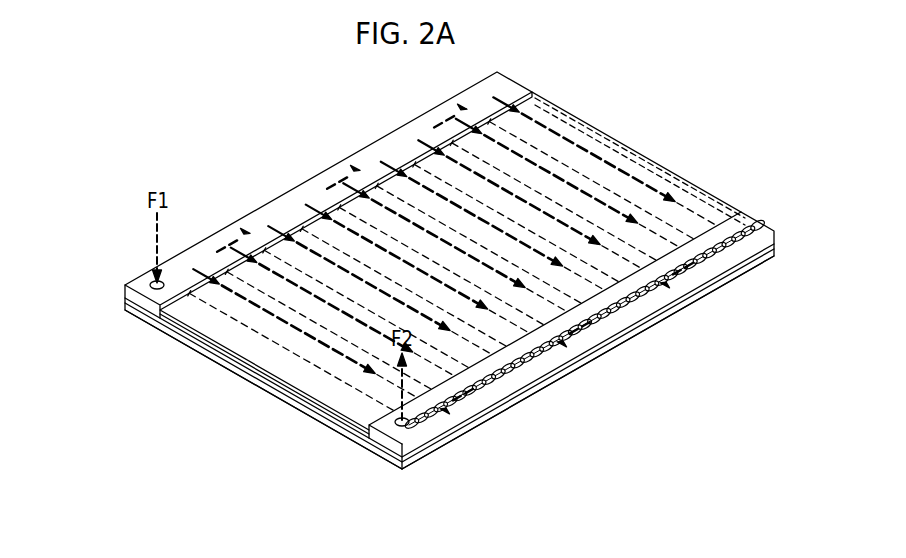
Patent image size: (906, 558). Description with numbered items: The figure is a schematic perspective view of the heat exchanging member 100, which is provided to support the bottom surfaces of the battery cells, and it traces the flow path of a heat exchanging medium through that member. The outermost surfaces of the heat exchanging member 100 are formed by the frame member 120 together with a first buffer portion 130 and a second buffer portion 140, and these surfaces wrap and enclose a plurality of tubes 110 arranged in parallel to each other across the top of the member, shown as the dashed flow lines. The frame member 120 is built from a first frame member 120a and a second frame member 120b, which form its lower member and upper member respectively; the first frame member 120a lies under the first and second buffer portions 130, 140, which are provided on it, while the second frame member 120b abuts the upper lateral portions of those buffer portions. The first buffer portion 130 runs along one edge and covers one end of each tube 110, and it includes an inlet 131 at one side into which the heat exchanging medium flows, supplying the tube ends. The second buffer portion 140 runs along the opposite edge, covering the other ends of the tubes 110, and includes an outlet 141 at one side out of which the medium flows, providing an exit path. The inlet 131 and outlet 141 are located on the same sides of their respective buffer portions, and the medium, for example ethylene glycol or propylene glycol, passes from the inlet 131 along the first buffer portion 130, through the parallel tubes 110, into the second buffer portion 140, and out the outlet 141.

The heat exchanging member 100 is at (662, 156).
The tube 110 is at (538, 121).
The frame member 120 is at (157, 430).
The first frame member 120a is at (233, 369).
The second frame member 120b is at (200, 333).
The first buffer portion 130 is at (230, 232).
The inlet 131 is at (152, 279).
The second buffer portion 140 is at (532, 380).
The outlet 141 is at (412, 423).